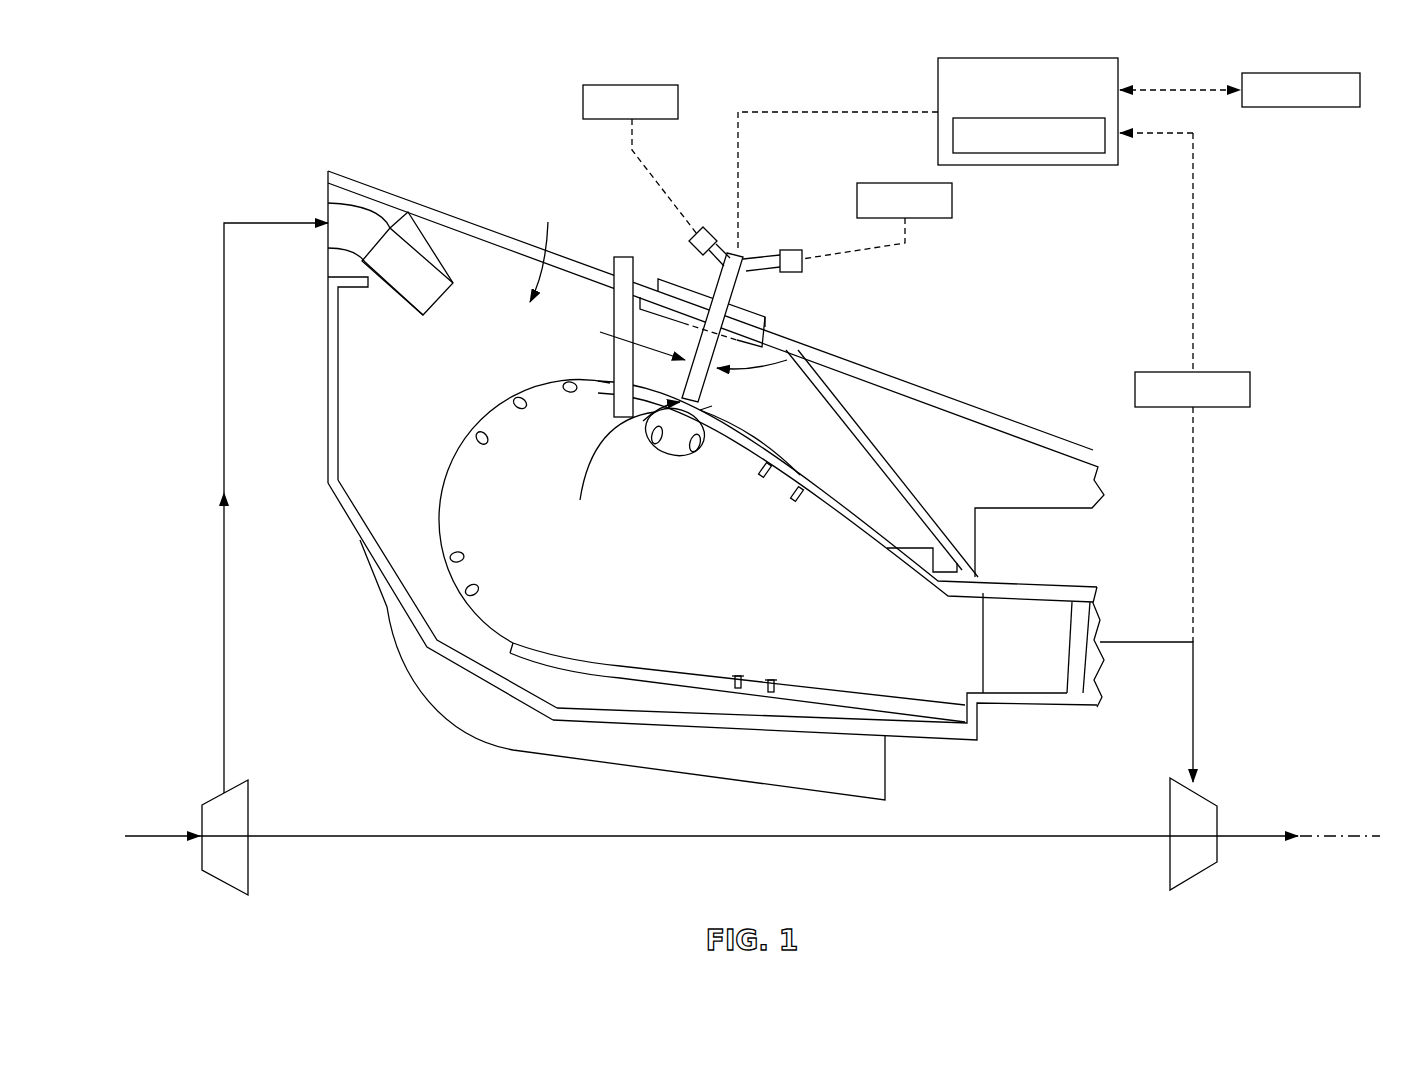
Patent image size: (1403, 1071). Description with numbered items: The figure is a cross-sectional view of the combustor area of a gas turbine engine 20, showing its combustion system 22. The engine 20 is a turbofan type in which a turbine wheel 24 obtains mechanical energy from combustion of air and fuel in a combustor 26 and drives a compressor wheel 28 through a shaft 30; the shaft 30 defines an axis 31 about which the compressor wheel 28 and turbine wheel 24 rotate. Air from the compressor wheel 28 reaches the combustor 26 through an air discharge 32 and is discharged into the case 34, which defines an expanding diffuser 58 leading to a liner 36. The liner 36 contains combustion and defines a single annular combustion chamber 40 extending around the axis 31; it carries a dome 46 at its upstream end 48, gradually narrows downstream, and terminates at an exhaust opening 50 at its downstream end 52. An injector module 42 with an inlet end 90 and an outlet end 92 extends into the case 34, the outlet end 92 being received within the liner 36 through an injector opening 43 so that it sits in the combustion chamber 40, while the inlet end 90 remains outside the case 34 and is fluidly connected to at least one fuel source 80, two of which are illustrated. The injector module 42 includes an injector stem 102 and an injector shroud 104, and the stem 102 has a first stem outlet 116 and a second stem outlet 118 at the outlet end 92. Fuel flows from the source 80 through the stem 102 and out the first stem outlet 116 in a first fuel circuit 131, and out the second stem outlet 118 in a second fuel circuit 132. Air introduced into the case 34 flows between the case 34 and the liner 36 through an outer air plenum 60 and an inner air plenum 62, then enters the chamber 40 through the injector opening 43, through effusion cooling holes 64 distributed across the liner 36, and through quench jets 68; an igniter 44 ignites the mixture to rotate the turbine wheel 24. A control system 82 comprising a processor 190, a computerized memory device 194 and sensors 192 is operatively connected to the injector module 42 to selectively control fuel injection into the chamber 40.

The engine 20 is at (1026, 426).
The combustion system 22 is at (548, 247).
The turbine wheel 24 is at (1222, 818).
The combustor 26 is at (856, 507).
The compressor wheel 28 is at (250, 812).
The shaft 30 is at (370, 836).
The axis 31 is at (1340, 848).
The air discharge 32 is at (425, 272).
The case 34 is at (390, 593).
The liner 36 is at (770, 442).
The combustion chamber 40 is at (757, 585).
The injector module 42 is at (790, 360).
The injector opening 43 is at (708, 408).
The igniter 44 is at (621, 265).
The dome 46 is at (455, 505).
The upstream end 48 is at (462, 470).
The exhaust opening 50 is at (967, 596).
The downstream end 52 is at (1030, 590).
The expanding diffuser 58 is at (360, 500).
The outer air plenum 60 is at (830, 405).
The inner air plenum 62 is at (533, 683).
The effusion cooling holes 64 is at (520, 407).
The quench jets 68 is at (766, 478).
The fuel source 80 is at (631, 85).
The control system 82 is at (990, 58).
The inlet end 90 is at (745, 258).
The outlet end 92 is at (674, 458).
The injector stem 102 is at (600, 332).
The injector shroud 104 is at (581, 500).
The first stem outlet 116 is at (652, 437).
The second stem outlet 118 is at (698, 456).
The first fuel circuit 131 is at (648, 152).
The second fuel circuit 132 is at (910, 235).
The processor 190 is at (1017, 118).
The sensors 192 is at (1175, 372).
The computerized memory device 194 is at (1297, 73).